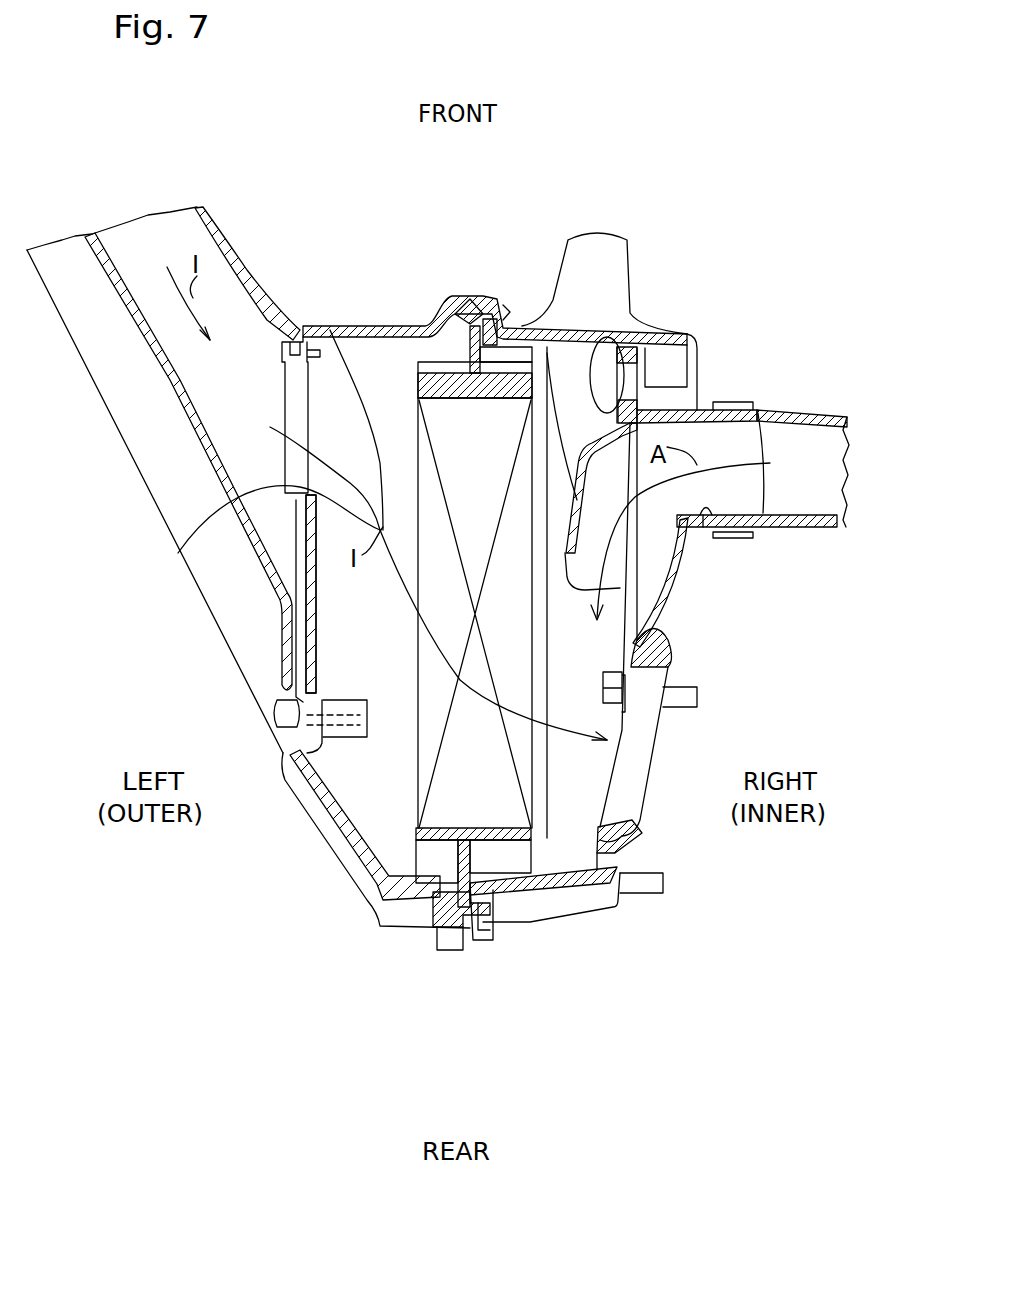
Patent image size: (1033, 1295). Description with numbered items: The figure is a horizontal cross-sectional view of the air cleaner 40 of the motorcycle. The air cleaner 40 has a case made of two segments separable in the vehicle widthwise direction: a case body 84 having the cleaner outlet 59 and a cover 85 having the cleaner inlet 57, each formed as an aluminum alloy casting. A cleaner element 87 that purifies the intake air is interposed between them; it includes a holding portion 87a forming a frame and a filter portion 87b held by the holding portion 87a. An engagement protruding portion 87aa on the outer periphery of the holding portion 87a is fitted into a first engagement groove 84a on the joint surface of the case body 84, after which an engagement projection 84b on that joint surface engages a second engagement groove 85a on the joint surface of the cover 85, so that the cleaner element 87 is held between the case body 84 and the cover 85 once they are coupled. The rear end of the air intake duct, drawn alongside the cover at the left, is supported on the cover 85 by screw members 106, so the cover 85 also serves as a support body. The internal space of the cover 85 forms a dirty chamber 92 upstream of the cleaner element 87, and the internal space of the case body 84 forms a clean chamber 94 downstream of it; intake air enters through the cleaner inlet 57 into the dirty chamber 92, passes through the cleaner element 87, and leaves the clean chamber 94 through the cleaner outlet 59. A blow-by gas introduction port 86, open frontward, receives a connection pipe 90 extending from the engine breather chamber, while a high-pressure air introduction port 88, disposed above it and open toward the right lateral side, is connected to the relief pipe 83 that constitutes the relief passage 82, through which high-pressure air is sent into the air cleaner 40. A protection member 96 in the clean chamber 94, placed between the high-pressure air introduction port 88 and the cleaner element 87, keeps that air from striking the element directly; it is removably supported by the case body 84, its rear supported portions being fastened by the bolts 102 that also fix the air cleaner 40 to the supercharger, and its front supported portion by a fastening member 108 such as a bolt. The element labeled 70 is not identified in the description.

The side panel (vehicle body) 70 is at (107, 413).
The cleaner inlet 57 is at (273, 423).
The cleaner element 87 is at (484, 487).
The holding portion 87a is at (430, 444).
The filter portion 87b is at (440, 470).
The engagement protruding portion 87aa is at (503, 323).
The case body 84 is at (520, 893).
The first engagement groove 84a is at (452, 318).
The engagement projection 84b is at (455, 318).
The cover 85 is at (407, 890).
The second engagement groove 85a is at (435, 330).
The connection pipe 90 is at (613, 260).
The fastening member 108 is at (617, 325).
The blow-by gas introduction port 86 is at (633, 356).
The relief pipe 83 is at (788, 410).
The relief passage 82 is at (800, 443).
The high-pressure air introduction port 88 is at (706, 517).
The protection member 96 is at (563, 540).
The dirty chamber 92 is at (375, 638).
The clean chamber 94 is at (586, 678).
The cleaner outlet 59 is at (637, 808).
The bolts 102 is at (680, 695).
The screw members 106 is at (275, 717).
The air cleaner 40 is at (508, 1013).